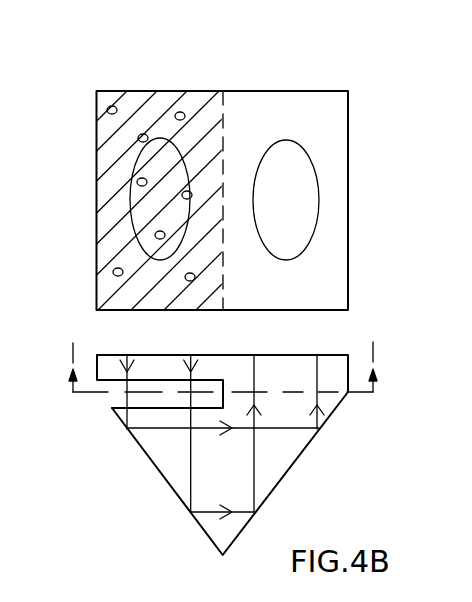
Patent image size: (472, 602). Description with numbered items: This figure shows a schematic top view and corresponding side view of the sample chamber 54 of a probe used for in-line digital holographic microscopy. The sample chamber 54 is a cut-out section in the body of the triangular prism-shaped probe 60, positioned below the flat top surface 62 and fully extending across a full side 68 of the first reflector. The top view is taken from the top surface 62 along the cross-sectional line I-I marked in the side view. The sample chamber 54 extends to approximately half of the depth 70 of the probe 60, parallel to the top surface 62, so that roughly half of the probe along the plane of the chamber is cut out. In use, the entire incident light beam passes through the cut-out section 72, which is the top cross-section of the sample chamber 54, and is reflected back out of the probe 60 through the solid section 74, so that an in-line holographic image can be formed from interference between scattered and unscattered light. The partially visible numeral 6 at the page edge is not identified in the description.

The truncated numeral at page edge 6 is at (9, 39).
The sample chamber 54 is at (122, 398).
The triangular prism-shaped probe 60 is at (263, 468).
The top surface 62 is at (253, 91).
The full side of the first reflector 68 is at (96, 270).
The depth of the probe 70 is at (187, 309).
The cut-out section 72 is at (130, 197).
The solid section 74 is at (328, 123).